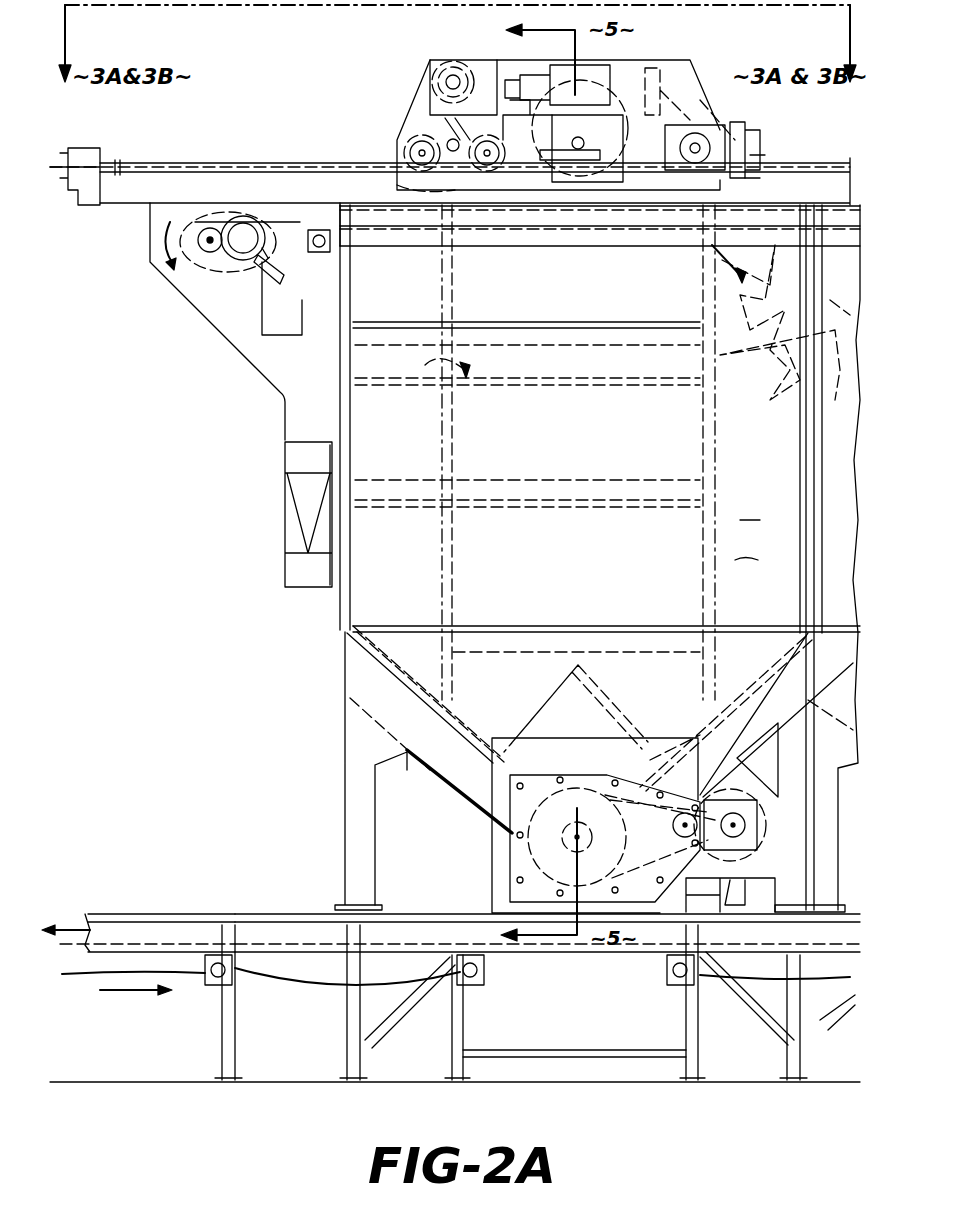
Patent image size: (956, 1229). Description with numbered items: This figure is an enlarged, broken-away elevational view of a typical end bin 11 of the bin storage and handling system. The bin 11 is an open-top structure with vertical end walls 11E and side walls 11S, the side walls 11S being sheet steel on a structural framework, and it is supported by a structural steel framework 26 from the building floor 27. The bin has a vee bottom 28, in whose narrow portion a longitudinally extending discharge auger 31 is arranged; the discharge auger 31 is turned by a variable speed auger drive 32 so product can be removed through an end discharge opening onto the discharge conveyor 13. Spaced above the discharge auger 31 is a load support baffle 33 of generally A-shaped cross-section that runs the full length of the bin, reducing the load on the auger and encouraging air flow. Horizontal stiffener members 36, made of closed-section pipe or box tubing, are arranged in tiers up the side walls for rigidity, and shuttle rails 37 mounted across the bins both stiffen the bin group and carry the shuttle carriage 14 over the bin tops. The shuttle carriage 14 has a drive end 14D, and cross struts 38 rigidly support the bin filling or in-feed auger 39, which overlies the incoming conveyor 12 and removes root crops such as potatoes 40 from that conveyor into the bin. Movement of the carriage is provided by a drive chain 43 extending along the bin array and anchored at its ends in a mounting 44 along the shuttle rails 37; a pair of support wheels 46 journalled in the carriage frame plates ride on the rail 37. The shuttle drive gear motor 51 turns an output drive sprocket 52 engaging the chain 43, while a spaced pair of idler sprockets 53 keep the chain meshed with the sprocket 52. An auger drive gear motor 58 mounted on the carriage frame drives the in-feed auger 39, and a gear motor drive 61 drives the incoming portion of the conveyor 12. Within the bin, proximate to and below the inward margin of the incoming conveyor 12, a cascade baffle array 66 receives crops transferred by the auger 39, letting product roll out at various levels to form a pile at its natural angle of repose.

The bin 11 is at (340, 658).
The side wall 11S is at (352, 590).
The end wall 11E is at (757, 540).
The incoming conveyor 12 is at (275, 210).
The discharge conveyor 13 is at (148, 945).
The shuttle carriage 14 is at (622, 60).
The drive end 14D is at (422, 105).
The structural steel framework 26 is at (345, 776).
The building floor 27 is at (295, 912).
The vee bottom 28 is at (445, 788).
The discharge auger 31 is at (533, 853).
The variable speed auger drive 32 is at (745, 855).
The load support baffle 33 is at (610, 682).
The stiffener member 36 is at (355, 551).
The shuttle rail 37 is at (760, 190).
The cross strut 38 is at (690, 118).
The in-feed auger 39 is at (670, 62).
The potatoes 40 is at (715, 280).
The drive chain 43 is at (185, 168).
The mounting 44 is at (92, 152).
The support wheel 46 is at (728, 120).
The shuttle drive gear motor 51 is at (562, 75).
The output drive sprocket 52 is at (480, 45).
The idler sprocket 53 is at (410, 140).
The auger drive gear motor 58 is at (748, 155).
The gear motor drive 61 is at (202, 262).
The cascade baffle array 66 is at (440, 365).